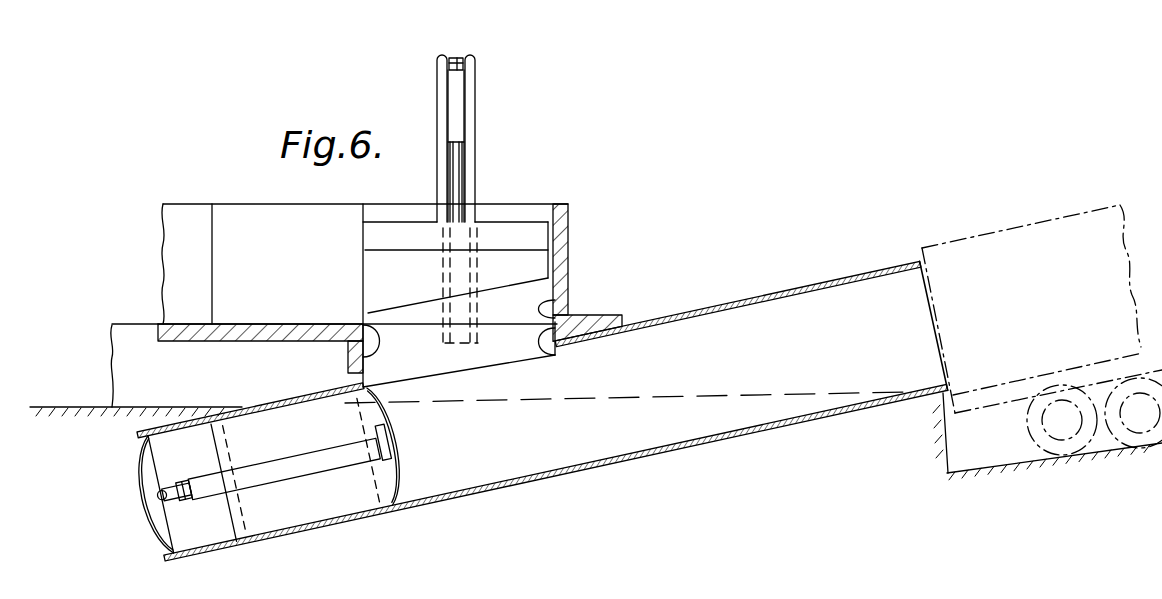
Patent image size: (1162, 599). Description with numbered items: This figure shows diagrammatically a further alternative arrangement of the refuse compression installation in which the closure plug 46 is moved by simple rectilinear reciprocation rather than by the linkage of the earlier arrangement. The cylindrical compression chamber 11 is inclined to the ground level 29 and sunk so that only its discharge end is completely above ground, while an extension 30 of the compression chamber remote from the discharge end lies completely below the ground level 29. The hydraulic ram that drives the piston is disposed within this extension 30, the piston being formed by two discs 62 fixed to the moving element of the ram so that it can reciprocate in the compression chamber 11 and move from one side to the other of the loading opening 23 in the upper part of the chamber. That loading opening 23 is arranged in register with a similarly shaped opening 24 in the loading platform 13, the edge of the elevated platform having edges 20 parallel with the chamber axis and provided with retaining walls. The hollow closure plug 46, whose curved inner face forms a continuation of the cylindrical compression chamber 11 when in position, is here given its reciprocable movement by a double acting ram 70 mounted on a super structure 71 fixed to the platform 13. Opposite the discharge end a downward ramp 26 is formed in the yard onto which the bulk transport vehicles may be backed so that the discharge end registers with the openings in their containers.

The compression chamber 11 is at (705, 308).
The platform 13 is at (212, 325).
The edges 20 is at (190, 222).
The loading opening 23 is at (568, 322).
The opening 24 is at (365, 322).
The downward ramp 26 is at (983, 467).
The ground level axis 29 is at (102, 413).
The extension 30 is at (177, 552).
The closure plug 46 is at (525, 262).
The discs 62 is at (353, 513).
The double acting ram 70 is at (457, 145).
The super structure 71 is at (437, 112).